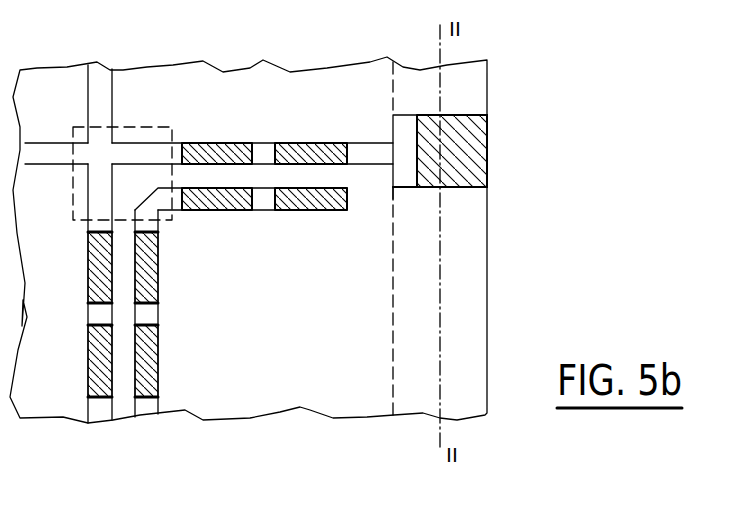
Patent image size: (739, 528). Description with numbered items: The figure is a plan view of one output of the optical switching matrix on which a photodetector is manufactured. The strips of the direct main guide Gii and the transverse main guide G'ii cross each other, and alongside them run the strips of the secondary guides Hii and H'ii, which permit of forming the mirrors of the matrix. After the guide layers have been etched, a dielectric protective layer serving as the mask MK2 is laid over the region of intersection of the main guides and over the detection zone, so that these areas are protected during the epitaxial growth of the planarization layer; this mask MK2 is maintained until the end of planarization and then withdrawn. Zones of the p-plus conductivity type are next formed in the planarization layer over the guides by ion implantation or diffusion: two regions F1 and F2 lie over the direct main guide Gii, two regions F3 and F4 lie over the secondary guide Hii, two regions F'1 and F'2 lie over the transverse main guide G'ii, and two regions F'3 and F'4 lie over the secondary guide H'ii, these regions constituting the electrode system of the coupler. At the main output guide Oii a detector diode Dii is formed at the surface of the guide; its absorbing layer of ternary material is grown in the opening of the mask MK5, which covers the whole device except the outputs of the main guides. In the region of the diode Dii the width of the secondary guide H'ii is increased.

The mask MK2 is at (145, 124).
The mask MK5 is at (474, 192).
The p+ region F1 is at (86, 377).
The p+ region F2 is at (86, 288).
The p+ region F3 is at (160, 357).
The p+ region F4 is at (160, 272).
The p+ region F'1 is at (220, 124).
The p+ region F'2 is at (311, 123).
The p+ region F'3 is at (217, 229).
The p+ region F'4 is at (311, 229).
The direct main guide Gii is at (99, 426).
The secondary guide Hii is at (146, 425).
The transverse main guide G'ii is at (477, 121).
The secondary guide H'ii is at (475, 245).
The diode Dii is at (472, 148).
The main output guide Oii is at (496, 163).